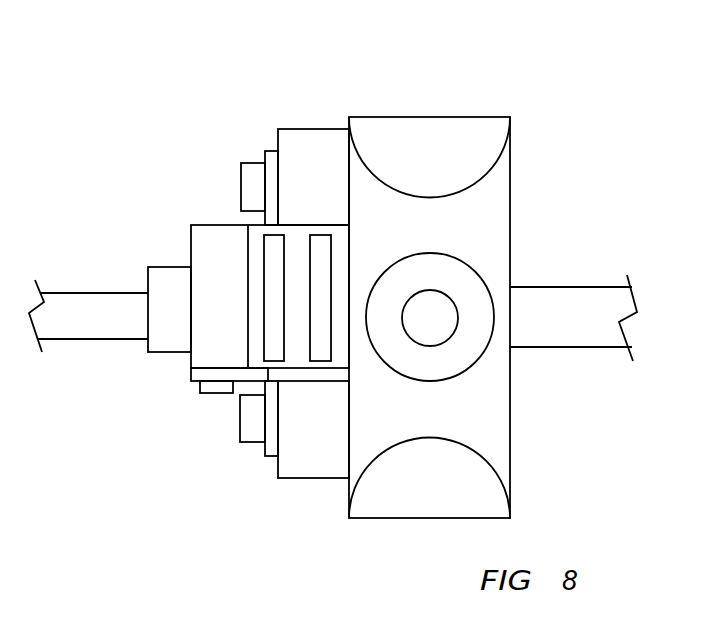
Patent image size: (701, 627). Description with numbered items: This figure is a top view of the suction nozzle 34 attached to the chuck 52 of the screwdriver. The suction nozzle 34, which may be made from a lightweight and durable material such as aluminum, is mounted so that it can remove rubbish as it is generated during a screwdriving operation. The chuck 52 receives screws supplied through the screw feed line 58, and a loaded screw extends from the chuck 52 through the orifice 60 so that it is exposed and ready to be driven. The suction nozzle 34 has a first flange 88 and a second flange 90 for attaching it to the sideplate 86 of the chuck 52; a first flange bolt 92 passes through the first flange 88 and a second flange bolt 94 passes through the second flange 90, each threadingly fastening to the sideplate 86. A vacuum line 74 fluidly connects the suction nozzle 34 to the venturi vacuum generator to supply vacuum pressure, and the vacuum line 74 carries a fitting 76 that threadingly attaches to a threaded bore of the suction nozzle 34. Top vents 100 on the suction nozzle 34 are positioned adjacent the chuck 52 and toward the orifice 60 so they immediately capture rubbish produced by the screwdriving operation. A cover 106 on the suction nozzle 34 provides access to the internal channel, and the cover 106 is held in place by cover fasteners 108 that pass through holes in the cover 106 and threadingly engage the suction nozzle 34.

The suction nozzle 34 is at (209, 225).
The chuck 52 is at (453, 117).
The screw feed line 58 is at (570, 347).
The orifice 60 is at (433, 300).
The vacuum line 74 is at (97, 292).
The fitting 76 is at (167, 267).
The sideplate 86 is at (323, 129).
The first flange 88 is at (272, 151).
The second flange 90 is at (268, 460).
The first flange bolt 92 is at (252, 163).
The second flange bolt 94 is at (252, 445).
The top vents 100 is at (331, 262).
The cover 106 is at (191, 375).
The cover fasteners 108 is at (213, 398).